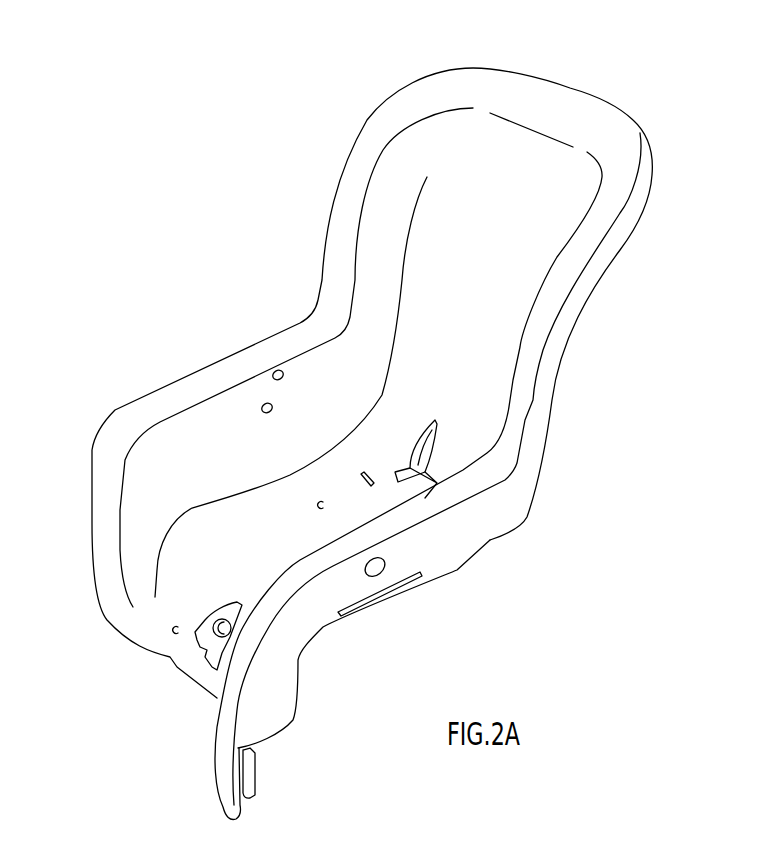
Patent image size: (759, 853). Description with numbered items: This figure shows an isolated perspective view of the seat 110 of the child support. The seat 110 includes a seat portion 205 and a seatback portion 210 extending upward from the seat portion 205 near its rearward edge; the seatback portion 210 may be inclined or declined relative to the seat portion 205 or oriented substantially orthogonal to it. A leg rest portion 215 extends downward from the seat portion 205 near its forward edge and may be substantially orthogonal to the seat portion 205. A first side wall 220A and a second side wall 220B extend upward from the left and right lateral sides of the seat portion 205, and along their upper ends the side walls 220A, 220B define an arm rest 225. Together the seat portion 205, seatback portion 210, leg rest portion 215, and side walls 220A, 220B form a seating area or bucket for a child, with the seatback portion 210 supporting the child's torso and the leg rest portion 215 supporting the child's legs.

The seat 110 is at (533, 168).
The seatback portion 210 is at (482, 138).
The arm rest 225 is at (165, 395).
The first side wall 220A is at (290, 565).
The second side wall 220B is at (165, 467).
The seat portion 205 is at (193, 552).
The leg rest portion 215 is at (188, 592).